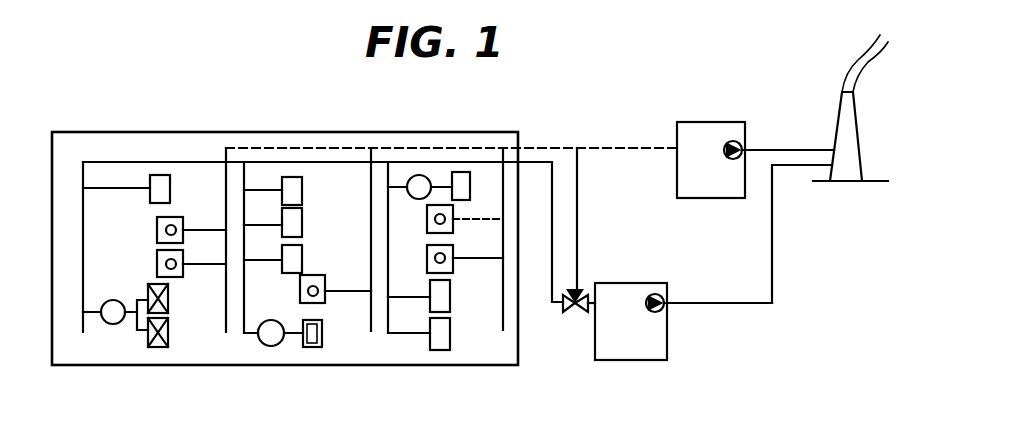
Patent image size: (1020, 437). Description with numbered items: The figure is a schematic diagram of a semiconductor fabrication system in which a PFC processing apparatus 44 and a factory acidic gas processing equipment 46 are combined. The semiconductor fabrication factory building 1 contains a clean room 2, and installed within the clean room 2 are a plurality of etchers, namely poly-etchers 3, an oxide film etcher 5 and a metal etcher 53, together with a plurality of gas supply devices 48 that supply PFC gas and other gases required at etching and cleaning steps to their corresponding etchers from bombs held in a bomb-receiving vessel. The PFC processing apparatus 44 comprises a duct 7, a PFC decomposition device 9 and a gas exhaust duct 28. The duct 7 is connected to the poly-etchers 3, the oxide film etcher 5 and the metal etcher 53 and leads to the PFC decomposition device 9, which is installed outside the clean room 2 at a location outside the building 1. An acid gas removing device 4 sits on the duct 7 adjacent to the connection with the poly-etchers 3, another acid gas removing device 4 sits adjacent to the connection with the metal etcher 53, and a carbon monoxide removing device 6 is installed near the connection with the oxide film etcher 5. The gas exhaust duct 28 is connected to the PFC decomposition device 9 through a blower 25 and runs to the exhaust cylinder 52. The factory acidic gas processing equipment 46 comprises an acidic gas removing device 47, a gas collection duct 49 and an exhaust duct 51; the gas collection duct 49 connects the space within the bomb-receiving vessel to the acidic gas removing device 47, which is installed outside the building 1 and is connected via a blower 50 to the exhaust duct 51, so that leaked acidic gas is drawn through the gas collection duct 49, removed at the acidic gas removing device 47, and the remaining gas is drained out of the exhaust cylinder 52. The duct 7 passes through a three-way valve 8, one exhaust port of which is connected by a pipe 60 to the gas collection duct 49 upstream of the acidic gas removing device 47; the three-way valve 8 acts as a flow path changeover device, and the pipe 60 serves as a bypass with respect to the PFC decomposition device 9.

The building 1 is at (300, 367).
The clean room 2 is at (482, 352).
The poly-etchers 3 is at (169, 335).
The acid gas removing device 4 is at (113, 300).
The oxide film etcher 5 is at (322, 328).
The carbon monoxide removing device 6 is at (270, 320).
The duct 7 is at (200, 168).
The three-way valve 8 is at (574, 313).
The PFC decomposition device 9 is at (636, 361).
The blower 25 is at (657, 312).
The gas exhaust duct 28 is at (773, 262).
The PFC processing apparatus 44 is at (715, 303).
The factory acidic gas processing equipment 46 is at (652, 150).
The acidic gas removing device 47 is at (713, 198).
The gas supply devices 48 is at (157, 230).
The gas collection duct 49 is at (453, 147).
The blower 50 is at (730, 160).
The exhaust duct 51 is at (788, 166).
The exhaust cylinder 52 is at (836, 123).
The metal etcher 53 is at (470, 192).
The pipe 60 is at (578, 218).